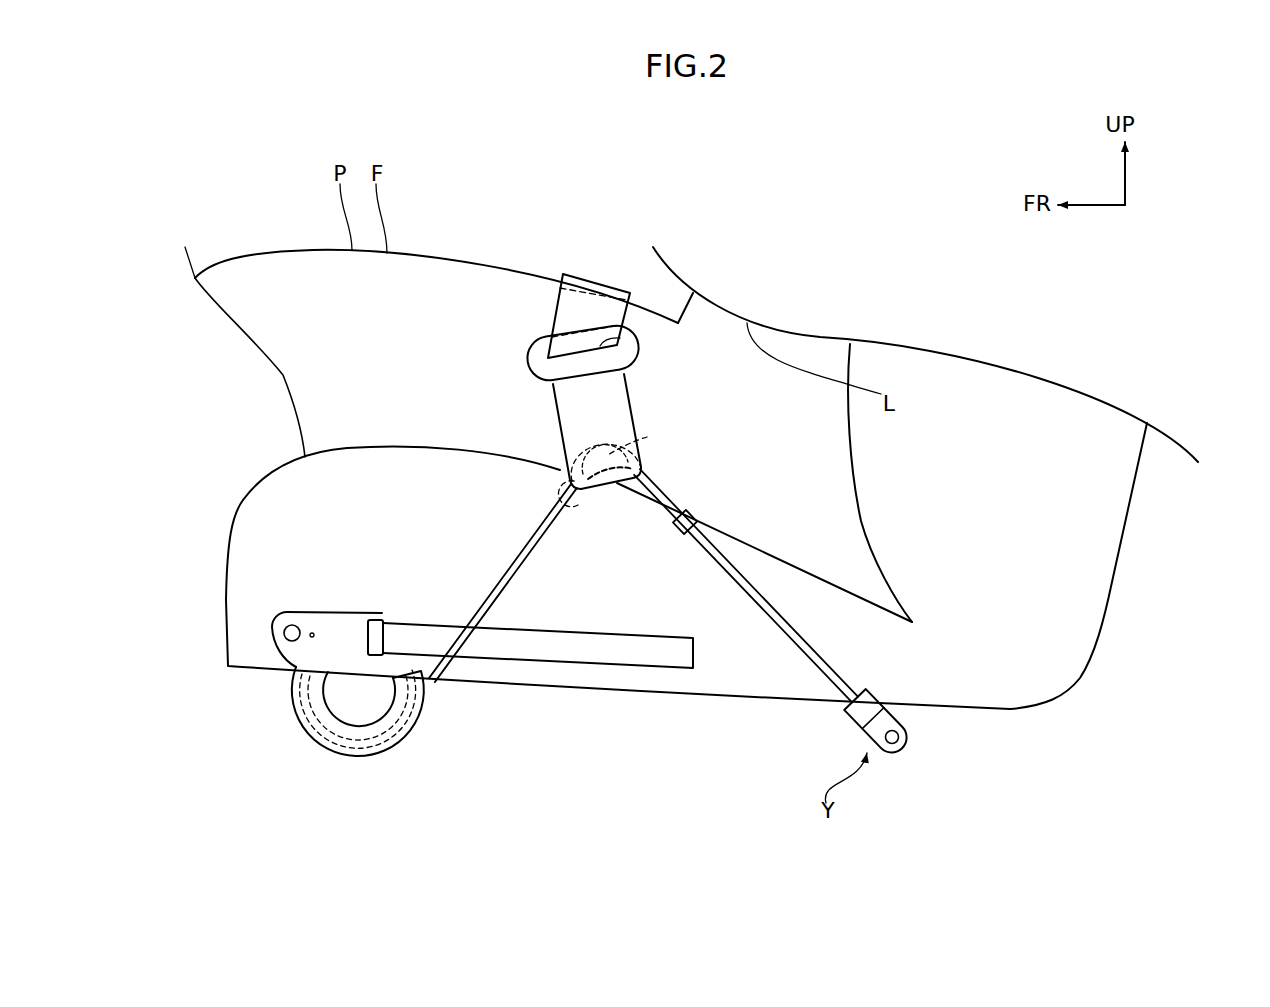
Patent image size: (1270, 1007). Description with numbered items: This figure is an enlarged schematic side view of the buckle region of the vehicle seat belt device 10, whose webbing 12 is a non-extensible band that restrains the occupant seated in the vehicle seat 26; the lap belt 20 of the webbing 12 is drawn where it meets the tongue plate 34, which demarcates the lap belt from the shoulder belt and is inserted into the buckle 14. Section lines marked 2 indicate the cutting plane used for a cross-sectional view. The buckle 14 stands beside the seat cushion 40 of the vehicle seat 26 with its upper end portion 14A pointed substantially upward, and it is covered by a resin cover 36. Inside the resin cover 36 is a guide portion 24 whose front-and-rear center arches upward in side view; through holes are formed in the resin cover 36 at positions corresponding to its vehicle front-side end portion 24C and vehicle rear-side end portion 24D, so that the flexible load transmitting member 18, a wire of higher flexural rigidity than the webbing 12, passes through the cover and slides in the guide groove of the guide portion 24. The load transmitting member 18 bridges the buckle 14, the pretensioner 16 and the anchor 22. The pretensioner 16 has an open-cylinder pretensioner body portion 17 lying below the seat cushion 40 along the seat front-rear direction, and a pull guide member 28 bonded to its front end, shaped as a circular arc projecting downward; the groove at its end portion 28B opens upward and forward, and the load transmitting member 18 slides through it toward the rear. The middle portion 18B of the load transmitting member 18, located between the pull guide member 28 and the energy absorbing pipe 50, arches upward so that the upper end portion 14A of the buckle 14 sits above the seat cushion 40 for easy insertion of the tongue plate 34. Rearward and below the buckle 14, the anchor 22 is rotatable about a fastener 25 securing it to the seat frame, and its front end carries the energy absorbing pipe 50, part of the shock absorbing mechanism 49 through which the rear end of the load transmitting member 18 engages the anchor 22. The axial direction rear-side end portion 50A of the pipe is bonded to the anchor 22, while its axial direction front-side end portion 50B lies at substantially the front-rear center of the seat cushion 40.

The vehicle seat belt device 10 is at (500, 153).
The webbing 12 is at (610, 276).
The lap belt 20 is at (590, 281).
The section line 2 is at (553, 228).
The buckle 14 is at (559, 421).
The upper end portion of the buckle 14A is at (630, 339).
The tongue plate 34 is at (530, 353).
The resin cover 36 is at (636, 413).
The pretensioner 16 is at (382, 580).
The pretensioner body portion 17 is at (587, 633).
The load transmitting member 18 is at (517, 551).
The middle portion of the load transmitting member 18B is at (647, 437).
The anchor 22 is at (888, 707).
The guide portion 24 is at (571, 470).
The vehicle front-side end portion of the guide portion 24C is at (565, 500).
The vehicle rear-side end portion of the guide portion 24D is at (640, 465).
The fastener 25 is at (900, 735).
The vehicle seat 26 is at (1134, 547).
The pull guide member 28 is at (315, 610).
The end portion of the pull guide member 28B is at (410, 678).
The seat cushion 40 is at (343, 468).
The shock absorbing mechanism 49 is at (815, 626).
The energy absorbing pipe 50 is at (733, 554).
The axial direction rear-side end portion of the energy absorbing pipe 50A is at (852, 694).
The axial direction front-side end portion of the energy absorbing pipe 50B is at (695, 514).